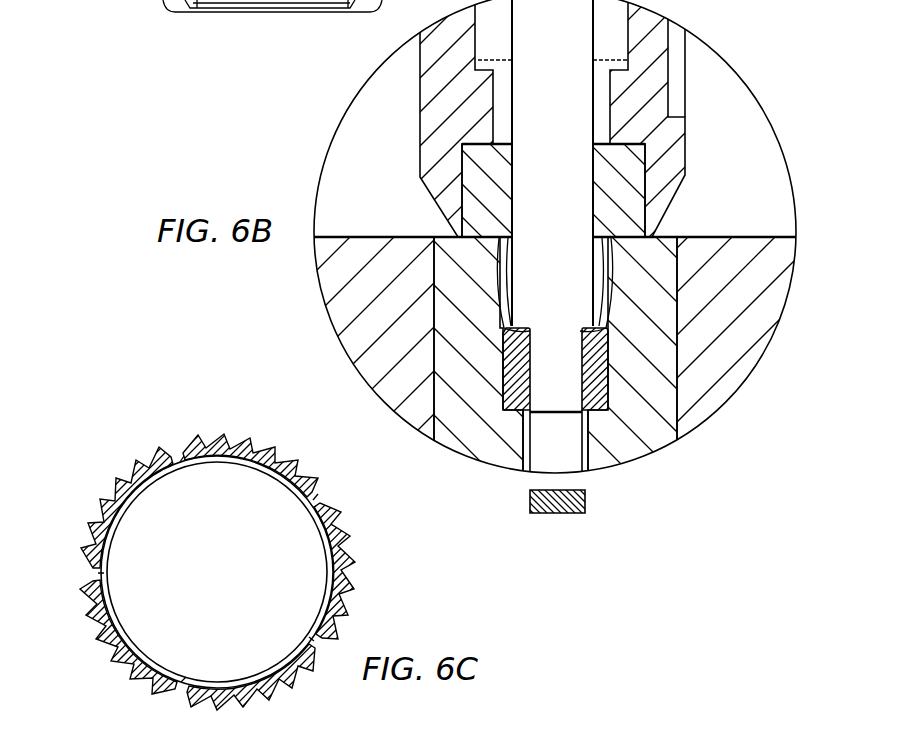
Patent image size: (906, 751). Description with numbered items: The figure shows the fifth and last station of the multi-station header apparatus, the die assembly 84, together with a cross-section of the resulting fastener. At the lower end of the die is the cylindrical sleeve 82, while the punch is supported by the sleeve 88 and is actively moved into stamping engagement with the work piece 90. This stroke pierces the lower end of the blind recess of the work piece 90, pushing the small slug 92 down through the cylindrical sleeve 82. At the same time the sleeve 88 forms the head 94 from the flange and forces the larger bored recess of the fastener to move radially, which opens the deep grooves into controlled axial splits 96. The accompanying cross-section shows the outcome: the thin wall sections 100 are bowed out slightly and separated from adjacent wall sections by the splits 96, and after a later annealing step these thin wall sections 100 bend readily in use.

In FIG. 6B, the cylindrical sleeve 82 is at (590, 440).
In FIG. 6B, the die assembly 84 is at (468, 340).
In FIG. 6B, the sleeve 88 is at (620, 181).
In FIG. 6B, the work piece 90 is at (610, 363).
In FIG. 6C, the work piece 90 is at (388, 576).
In FIG. 6B, the small slug 92 is at (567, 513).
In FIG. 6B, the head 94 is at (600, 230).
In FIG. 6B, the axial splits 96 is at (610, 290).
In FIG. 6C, the axial splits 96 is at (182, 462).
In FIG. 6C, the thin wall sections 100 is at (103, 500).